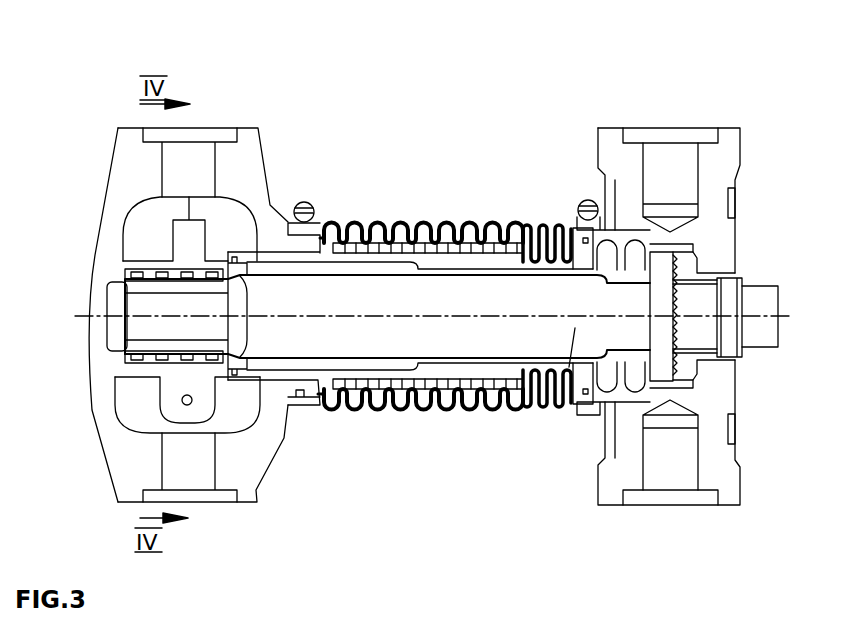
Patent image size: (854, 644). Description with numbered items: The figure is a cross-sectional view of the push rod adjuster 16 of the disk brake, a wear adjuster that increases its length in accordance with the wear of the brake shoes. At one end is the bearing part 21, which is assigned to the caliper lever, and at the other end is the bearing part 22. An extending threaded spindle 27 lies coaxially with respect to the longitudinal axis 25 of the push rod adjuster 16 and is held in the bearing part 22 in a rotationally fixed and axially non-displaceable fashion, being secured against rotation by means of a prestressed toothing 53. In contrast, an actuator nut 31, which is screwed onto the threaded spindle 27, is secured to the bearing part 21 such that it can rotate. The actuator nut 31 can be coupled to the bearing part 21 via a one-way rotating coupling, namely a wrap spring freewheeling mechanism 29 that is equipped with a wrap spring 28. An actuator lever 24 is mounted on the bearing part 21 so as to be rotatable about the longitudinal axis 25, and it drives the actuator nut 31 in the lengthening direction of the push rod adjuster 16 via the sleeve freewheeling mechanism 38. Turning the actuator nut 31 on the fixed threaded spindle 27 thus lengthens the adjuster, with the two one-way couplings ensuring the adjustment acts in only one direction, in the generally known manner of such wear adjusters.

The push rod adjuster 16 is at (478, 153).
The bearing part 21 is at (258, 456).
The bearing part 22 is at (722, 396).
The actuator lever 24 is at (170, 393).
The longitudinal axis 25 is at (782, 310).
The threaded spindle 27 is at (548, 413).
The wrap spring 28 is at (353, 243).
The wrap spring freewheeling mechanism 29 is at (396, 214).
The actuator nut 31 is at (500, 413).
The sleeve freewheeling mechanism 38 is at (160, 267).
The prestressed toothing 53 is at (687, 302).